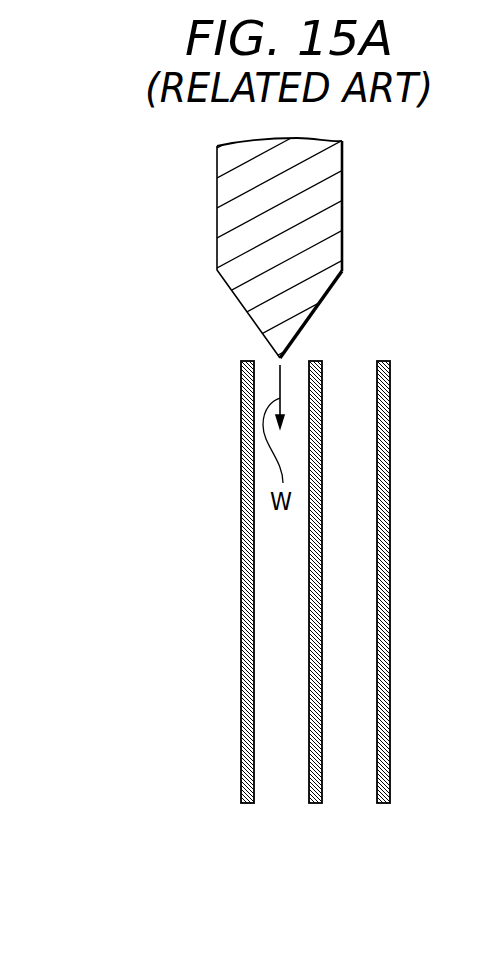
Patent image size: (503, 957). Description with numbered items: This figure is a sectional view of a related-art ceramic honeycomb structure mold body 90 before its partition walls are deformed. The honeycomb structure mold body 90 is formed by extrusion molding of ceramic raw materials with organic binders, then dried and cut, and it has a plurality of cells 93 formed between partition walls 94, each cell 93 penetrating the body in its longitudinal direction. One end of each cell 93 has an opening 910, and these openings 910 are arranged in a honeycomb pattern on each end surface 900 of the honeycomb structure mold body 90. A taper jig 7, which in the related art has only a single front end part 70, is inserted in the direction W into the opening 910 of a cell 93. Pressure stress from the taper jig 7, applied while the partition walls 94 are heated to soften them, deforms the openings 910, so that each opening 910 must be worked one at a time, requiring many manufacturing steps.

The taper jig 7 is at (317, 172).
The front end part 70 is at (277, 273).
The honeycomb structure mold body 90 is at (324, 582).
The cell 93 is at (280, 570).
The partition wall 94 is at (245, 693).
The end surface 900 is at (354, 351).
The opening 910 is at (251, 361).